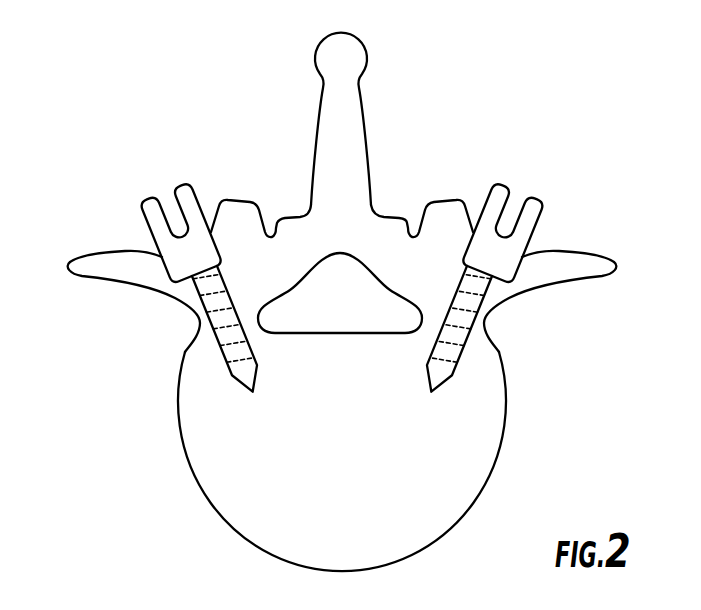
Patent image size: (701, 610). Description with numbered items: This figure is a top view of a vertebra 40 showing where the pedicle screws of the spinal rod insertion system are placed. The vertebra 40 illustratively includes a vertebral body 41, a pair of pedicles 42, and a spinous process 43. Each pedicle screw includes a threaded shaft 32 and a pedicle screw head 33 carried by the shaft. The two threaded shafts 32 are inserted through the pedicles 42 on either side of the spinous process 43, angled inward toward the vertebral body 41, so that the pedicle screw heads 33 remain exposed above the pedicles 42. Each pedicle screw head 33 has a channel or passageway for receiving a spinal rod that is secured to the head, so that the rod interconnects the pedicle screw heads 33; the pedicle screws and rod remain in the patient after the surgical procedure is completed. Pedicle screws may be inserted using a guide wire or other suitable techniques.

The threaded shaft 32 is at (453, 350).
The pedicle screw head 33 is at (535, 212).
The vertebra 40 is at (339, 301).
The vertebral body 41 is at (440, 537).
The pedicles 42 is at (112, 265).
The spinous process 43 is at (350, 60).